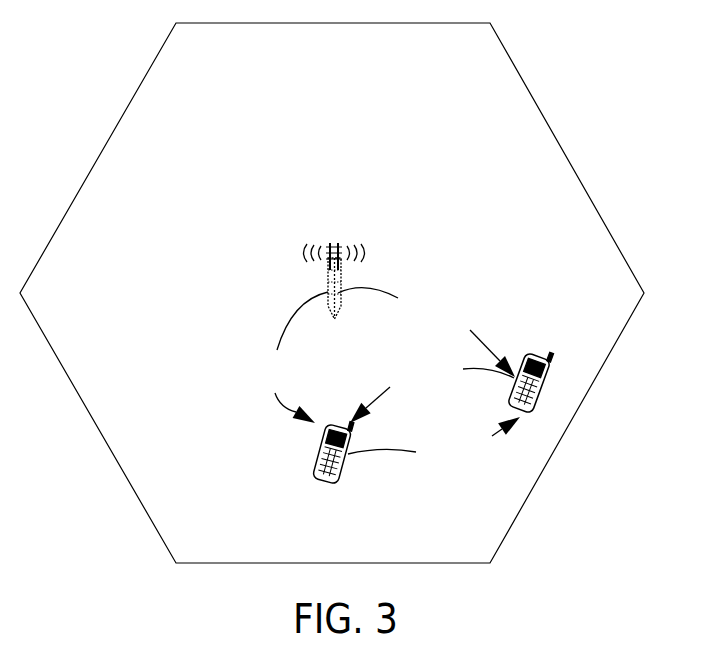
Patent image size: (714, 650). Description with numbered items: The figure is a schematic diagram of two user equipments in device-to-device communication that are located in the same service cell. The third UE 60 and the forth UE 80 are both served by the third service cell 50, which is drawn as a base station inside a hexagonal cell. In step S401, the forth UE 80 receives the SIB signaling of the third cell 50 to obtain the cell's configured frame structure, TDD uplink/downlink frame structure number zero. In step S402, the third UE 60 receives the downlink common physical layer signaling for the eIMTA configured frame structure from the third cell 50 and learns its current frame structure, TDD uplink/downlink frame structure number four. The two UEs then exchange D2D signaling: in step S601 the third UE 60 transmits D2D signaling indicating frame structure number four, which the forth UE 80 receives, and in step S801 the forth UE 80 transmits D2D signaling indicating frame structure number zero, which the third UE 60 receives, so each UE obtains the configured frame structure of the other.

The third service cell 50 is at (330, 238).
The third UE 60 is at (350, 455).
The forth UE 80 is at (540, 382).
The step S401 is at (426, 332).
The step S402 is at (280, 357).
The step S801 is at (432, 387).
The step S601 is at (434, 440).